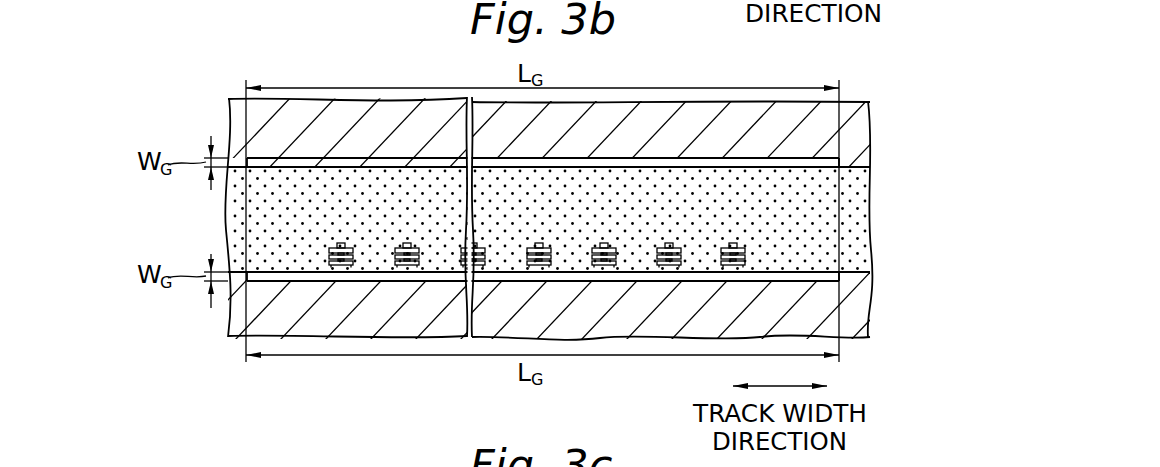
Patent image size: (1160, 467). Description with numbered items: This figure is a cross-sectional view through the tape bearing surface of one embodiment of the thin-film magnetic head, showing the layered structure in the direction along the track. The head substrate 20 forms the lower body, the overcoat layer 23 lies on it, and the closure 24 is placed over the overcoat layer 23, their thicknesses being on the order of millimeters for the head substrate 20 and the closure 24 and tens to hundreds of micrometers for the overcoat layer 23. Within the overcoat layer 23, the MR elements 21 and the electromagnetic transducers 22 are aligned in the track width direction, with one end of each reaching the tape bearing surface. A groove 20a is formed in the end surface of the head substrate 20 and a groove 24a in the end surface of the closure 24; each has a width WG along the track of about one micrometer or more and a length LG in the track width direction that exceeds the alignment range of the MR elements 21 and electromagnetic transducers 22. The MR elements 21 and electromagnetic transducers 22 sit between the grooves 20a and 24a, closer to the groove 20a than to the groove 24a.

The head substrate 20 is at (851, 312).
The groove 20a is at (812, 280).
The MR element 21 is at (759, 259).
The electromagnetic transducer 22 is at (758, 245).
The overcoat layer 23 is at (849, 223).
The closure 24 is at (851, 136).
The groove 24a is at (807, 164).